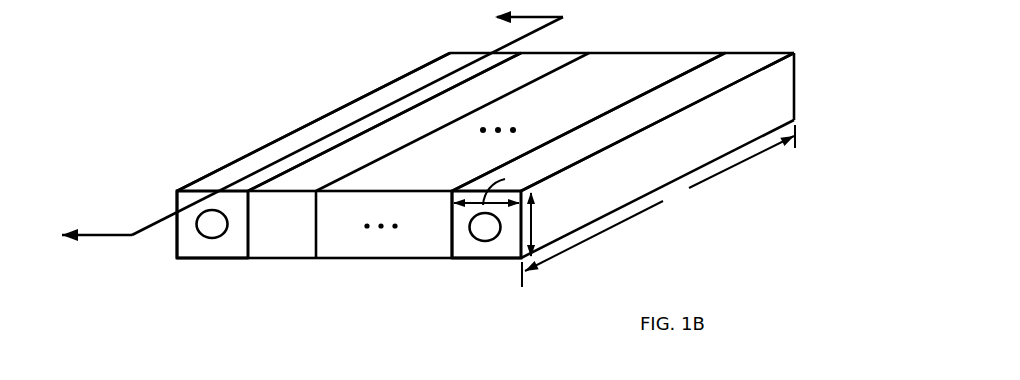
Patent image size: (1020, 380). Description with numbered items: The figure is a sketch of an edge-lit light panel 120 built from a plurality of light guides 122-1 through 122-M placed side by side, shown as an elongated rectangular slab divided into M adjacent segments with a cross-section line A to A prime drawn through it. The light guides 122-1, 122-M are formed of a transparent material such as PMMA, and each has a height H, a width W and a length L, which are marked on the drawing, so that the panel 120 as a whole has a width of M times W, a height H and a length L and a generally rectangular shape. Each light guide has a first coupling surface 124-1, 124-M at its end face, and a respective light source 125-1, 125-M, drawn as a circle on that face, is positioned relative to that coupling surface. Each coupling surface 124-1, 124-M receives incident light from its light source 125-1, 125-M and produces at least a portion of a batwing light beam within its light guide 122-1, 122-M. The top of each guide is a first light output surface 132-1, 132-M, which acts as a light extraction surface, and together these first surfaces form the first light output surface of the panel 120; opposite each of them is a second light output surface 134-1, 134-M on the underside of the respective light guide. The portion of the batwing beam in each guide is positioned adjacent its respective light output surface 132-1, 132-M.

The edge-lit light panel 120 is at (90, 25).
The light guide 122-M is at (224, 267).
The light guide 122-1 is at (498, 272).
The first coupling surface 124-M is at (183, 199).
The first coupling surface 124-1 is at (463, 243).
The light source 125-M is at (192, 224).
The light source 125-1 is at (466, 227).
The first light output surface 132-M is at (442, 64).
The first light output surface 132-1 is at (742, 63).
The second light output surface 134-M is at (204, 260).
The second light output surface 134-1 is at (482, 261).